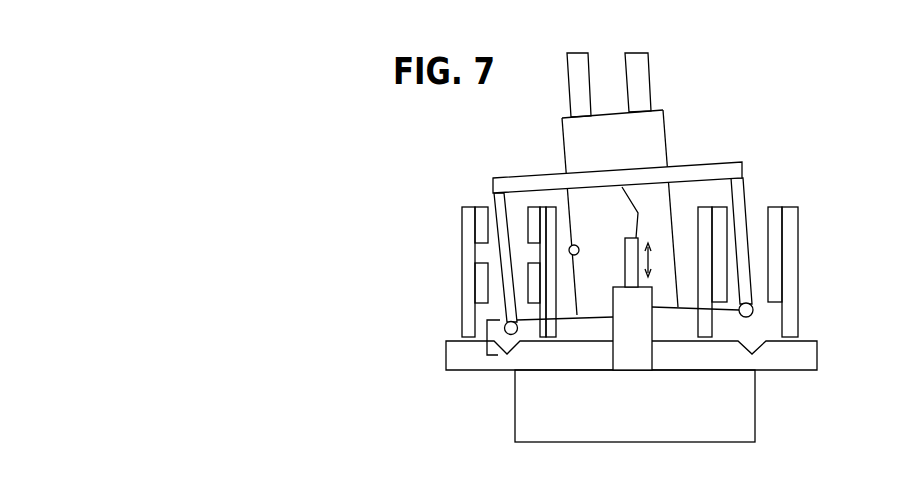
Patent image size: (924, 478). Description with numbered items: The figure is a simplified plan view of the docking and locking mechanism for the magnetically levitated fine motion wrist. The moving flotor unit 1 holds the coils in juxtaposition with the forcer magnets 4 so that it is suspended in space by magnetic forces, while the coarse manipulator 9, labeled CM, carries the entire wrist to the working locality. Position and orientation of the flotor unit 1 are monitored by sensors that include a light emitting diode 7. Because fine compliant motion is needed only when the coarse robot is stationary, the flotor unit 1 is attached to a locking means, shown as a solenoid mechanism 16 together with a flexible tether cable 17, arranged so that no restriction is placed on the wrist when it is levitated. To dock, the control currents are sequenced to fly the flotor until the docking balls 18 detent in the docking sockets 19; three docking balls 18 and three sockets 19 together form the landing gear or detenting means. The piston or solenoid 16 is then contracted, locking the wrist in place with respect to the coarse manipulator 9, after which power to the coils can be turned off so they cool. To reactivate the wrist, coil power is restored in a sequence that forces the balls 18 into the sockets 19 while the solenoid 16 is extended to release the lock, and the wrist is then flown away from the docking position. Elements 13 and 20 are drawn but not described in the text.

The flotor unit 1 is at (742, 162).
The forcer magnets 4 is at (480, 202).
The diode 7 is at (579, 247).
The coarse manipulator 9 is at (755, 428).
The prongs 13 is at (650, 82).
The solenoid mechanism 16 is at (645, 310).
The flexible tether cable 17 is at (640, 213).
The docking balls 18 is at (753, 310).
The docking sockets 19 is at (757, 355).
The hook 20 is at (487, 337).